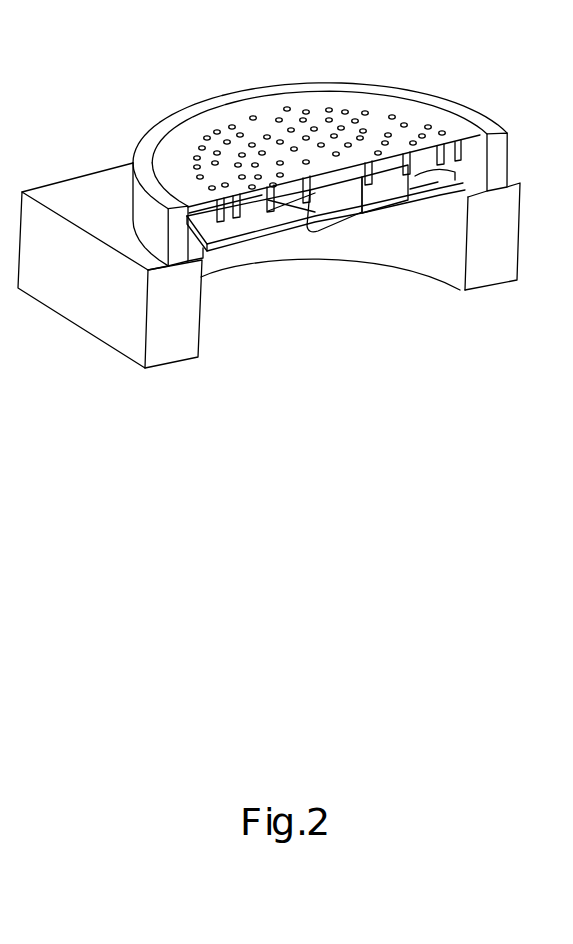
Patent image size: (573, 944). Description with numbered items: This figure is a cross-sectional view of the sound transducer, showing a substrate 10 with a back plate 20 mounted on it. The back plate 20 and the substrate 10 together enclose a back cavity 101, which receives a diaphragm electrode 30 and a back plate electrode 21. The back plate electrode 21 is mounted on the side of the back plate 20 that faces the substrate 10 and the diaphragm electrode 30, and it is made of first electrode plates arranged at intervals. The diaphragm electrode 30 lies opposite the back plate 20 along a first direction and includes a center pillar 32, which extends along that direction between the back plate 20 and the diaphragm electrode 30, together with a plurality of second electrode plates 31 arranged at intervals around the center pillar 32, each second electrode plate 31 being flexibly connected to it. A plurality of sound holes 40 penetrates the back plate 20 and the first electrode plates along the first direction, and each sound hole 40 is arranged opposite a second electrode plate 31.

The substrate 10 is at (65, 273).
The back cavity 101 is at (273, 296).
The back plate 20 is at (180, 163).
The back plate electrode 21 is at (450, 165).
The diaphragm electrode 30 is at (394, 197).
The second electrode plate 31 is at (378, 200).
The center pillar 32 is at (332, 207).
The sound hole 40 is at (268, 135).